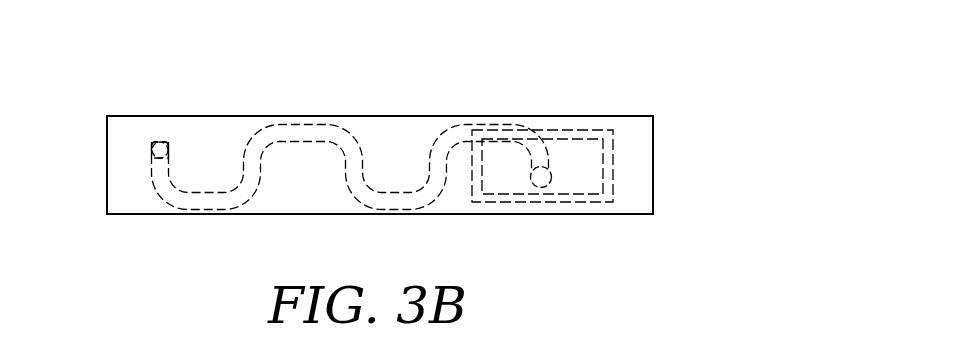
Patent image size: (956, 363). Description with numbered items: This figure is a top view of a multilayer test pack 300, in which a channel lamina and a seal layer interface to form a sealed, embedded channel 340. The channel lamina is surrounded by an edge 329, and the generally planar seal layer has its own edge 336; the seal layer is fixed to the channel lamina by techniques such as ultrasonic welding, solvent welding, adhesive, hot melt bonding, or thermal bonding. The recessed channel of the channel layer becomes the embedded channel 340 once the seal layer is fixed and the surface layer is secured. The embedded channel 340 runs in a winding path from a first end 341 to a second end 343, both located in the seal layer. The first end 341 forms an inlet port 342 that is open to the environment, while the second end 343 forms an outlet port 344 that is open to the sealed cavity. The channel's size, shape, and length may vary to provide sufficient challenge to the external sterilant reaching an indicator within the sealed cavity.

The multilayer test pack 300 is at (640, 52).
The edge 329 is at (233, 117).
The edge 336 is at (263, 215).
The embedded channel 340 is at (321, 136).
The first end 341 is at (148, 142).
The inlet port 342 is at (160, 143).
The second end 343 is at (547, 167).
The outlet port 344 is at (543, 201).